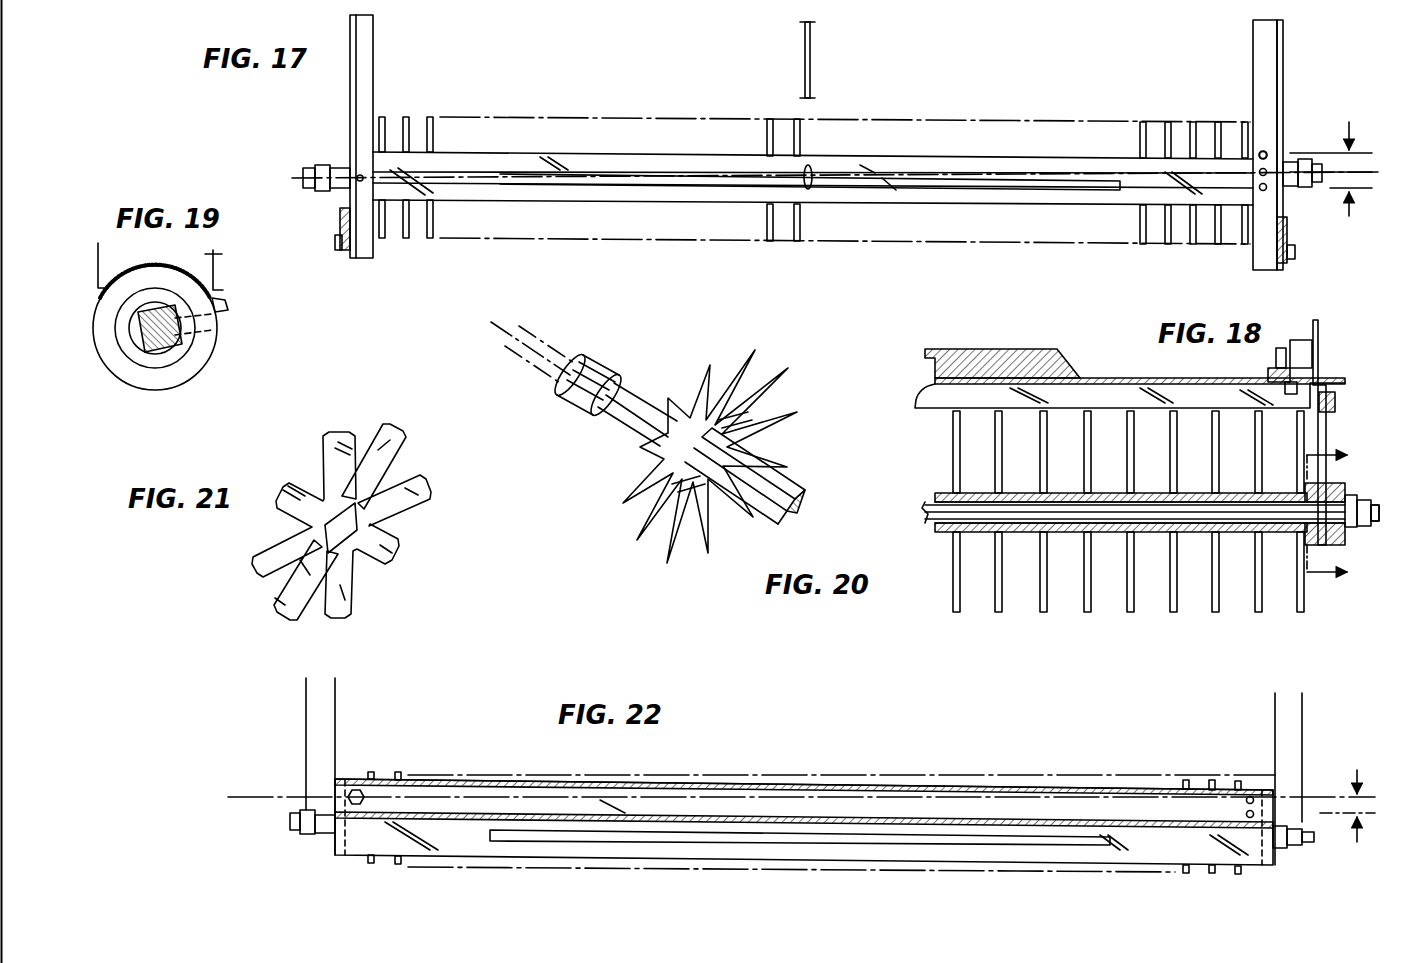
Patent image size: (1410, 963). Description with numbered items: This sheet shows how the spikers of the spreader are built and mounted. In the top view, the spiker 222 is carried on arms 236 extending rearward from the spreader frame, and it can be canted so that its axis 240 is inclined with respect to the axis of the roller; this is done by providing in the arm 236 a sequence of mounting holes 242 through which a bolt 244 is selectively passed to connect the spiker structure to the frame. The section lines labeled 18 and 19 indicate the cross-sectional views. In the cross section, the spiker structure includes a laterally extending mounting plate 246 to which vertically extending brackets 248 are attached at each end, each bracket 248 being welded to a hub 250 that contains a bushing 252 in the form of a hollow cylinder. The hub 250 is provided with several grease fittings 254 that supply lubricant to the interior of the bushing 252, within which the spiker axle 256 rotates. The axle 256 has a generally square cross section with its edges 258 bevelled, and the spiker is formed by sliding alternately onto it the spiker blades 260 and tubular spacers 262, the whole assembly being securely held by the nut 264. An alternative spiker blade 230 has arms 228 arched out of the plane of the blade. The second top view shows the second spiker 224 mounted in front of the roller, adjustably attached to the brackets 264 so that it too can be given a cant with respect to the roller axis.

In FIG. 17, the section line 18- 18 is at (1033, 190).
In FIG. 18, the section line 19- 19 is at (1346, 517).
In FIG. 17, the spiker 222 is at (450, 160).
In FIG. 22, the second spiker 224 is at (1146, 810).
In FIG. 21, the arms 228 is at (405, 507).
In FIG. 21, the spiker blade 230 is at (380, 562).
In FIG. 17, the arms 236 is at (368, 63).
In FIG. 18, the arms 236 is at (1318, 325).
In FIG. 17, the axis 240 is at (1142, 190).
In FIG. 17, the mounting holes 242 is at (1265, 151).
In FIG. 18, the bolt 244 is at (1283, 372).
In FIG. 18, the mounting plate 246 is at (1158, 364).
In FIG. 19, the brackets 248 is at (205, 262).
In FIG. 18, the brackets 248 is at (1328, 425).
In FIG. 19, the hub 250 is at (192, 300).
In FIG. 18, the hub 250 is at (1318, 572).
In FIG. 19, the bushing 252 is at (180, 335).
In FIG. 18, the bushing 252 is at (1330, 495).
In FIG. 19, the grease fittings 254 is at (226, 305).
In FIG. 19, the spiker axle 256 is at (165, 345).
In FIG. 20, the spiker axle 256 is at (806, 512).
In FIG. 18, the spiker axle 256 is at (1233, 522).
In FIG. 20, the edges 258 is at (770, 490).
In FIG. 20, the spiker blades 260 is at (760, 445).
In FIG. 20, the tubular spacers 262 is at (600, 372).
In FIG. 18, the nut 264 is at (1360, 535).
In FIG. 22, the nut 264 is at (320, 714).